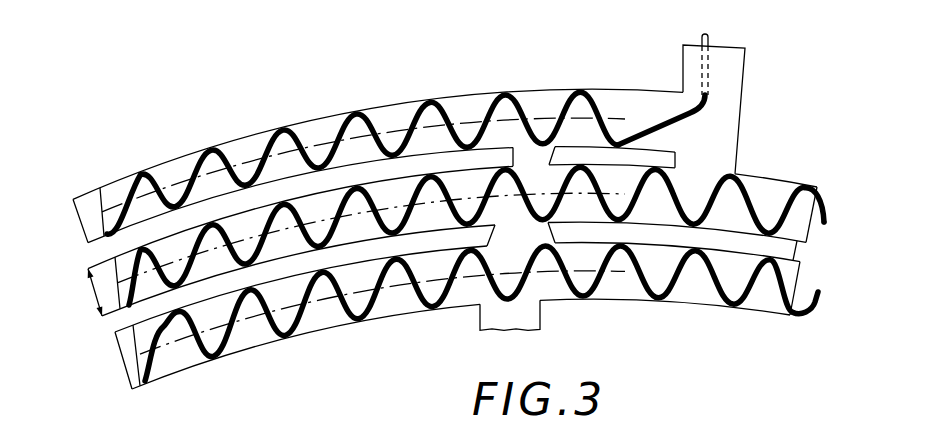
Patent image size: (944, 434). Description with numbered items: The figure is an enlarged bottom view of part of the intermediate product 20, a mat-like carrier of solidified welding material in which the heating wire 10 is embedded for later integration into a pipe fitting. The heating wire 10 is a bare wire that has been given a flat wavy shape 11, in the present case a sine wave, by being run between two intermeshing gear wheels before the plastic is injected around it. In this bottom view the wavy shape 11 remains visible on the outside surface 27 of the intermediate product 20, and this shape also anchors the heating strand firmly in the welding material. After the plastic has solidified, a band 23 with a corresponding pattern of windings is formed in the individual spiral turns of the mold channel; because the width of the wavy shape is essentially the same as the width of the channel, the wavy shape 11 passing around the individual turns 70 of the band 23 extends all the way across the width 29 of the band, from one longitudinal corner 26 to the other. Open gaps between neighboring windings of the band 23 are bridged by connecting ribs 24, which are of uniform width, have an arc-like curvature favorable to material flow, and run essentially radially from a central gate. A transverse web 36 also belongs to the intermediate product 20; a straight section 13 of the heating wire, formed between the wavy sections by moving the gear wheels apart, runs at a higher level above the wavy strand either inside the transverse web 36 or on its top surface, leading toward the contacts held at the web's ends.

The intermediate product 20 is at (370, 84).
The band 23 is at (80, 229).
The outside surface 27 is at (177, 176).
The width of band 29 is at (90, 292).
The wavy shape 11 is at (120, 366).
The heating wire 10 is at (818, 294).
The connecting rib 24 is at (507, 323).
The longitudinal corner of band 26 is at (795, 257).
The winding 70 is at (580, 266).
The transverse web 36 is at (735, 73).
The straight section 13 is at (703, 35).